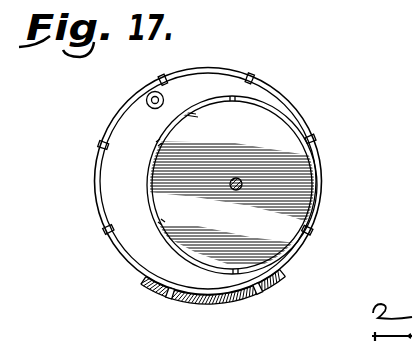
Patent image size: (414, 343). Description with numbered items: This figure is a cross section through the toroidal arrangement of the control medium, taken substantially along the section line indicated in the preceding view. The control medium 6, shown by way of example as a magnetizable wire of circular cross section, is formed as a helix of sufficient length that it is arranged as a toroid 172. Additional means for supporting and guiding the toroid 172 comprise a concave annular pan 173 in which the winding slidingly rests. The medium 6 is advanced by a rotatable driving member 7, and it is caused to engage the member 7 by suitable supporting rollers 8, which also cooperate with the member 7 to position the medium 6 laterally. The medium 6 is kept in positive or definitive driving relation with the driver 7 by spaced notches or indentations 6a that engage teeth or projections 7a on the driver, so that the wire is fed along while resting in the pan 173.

The control medium 6 is at (250, 78).
The notches 6a is at (106, 232).
The driving member 7 is at (307, 186).
The teeth 7a is at (232, 100).
The supporting rollers 8 is at (153, 108).
The toroid 172 is at (345, 138).
The concave annular pan 173 is at (236, 302).